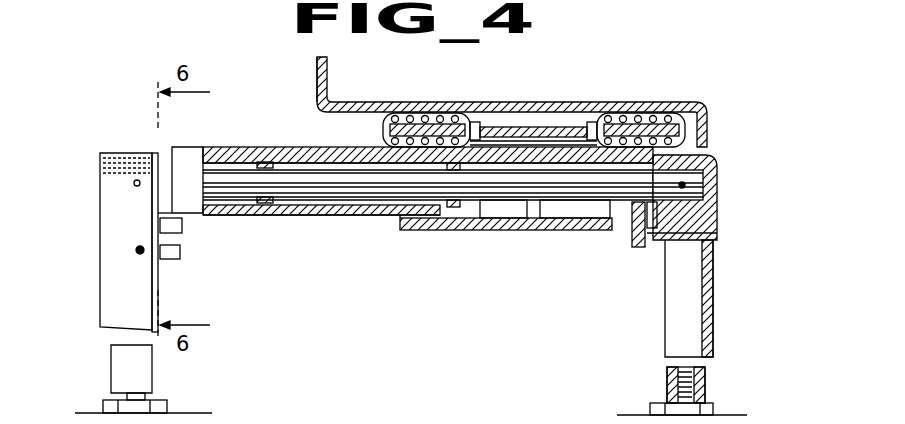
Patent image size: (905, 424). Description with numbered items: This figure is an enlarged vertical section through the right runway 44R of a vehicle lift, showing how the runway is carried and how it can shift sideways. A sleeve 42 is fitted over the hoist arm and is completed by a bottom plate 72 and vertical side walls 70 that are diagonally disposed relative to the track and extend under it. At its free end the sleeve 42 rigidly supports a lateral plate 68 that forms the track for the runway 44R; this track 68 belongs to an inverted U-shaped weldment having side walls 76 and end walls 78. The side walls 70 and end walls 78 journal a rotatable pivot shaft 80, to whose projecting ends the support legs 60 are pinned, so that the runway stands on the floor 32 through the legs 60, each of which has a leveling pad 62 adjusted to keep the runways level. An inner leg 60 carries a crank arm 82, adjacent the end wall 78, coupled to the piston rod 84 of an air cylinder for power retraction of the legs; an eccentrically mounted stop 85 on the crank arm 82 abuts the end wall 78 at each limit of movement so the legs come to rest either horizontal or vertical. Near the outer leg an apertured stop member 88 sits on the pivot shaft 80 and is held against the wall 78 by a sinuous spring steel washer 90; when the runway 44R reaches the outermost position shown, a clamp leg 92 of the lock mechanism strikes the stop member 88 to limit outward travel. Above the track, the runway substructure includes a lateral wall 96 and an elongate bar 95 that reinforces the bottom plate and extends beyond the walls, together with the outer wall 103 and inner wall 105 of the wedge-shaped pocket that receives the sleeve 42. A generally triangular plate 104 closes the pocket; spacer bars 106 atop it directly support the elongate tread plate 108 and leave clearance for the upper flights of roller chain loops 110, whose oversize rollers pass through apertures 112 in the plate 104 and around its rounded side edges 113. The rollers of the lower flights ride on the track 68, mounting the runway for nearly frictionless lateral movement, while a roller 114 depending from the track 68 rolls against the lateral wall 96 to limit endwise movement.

The floor 32 is at (178, 413).
The sleeve 42 is at (307, 205).
The runway 44R is at (695, 105).
The leg 60 is at (115, 358).
The leveling pad 62 is at (110, 397).
The lateral plate 68 is at (256, 152).
The side wall 70 is at (258, 205).
The bottom plate 72 is at (300, 207).
The side wall 76 is at (182, 150).
The end wall 78 is at (165, 195).
The pivot shaft 80 is at (550, 190).
The crank arm 82 is at (162, 268).
The piston rod 84 is at (136, 250).
The stop 85 is at (165, 240).
The stop member 88 is at (700, 238).
The spring steel washer 90 is at (640, 207).
The clamp leg 92 is at (645, 250).
The elongate bar 95 is at (483, 228).
The lateral wall 96 is at (548, 143).
The outer wall 103 is at (603, 207).
The triangular plate 104 is at (530, 127).
The inner wall 105 is at (410, 175).
The spacer bar 106 is at (405, 113).
The tread plate 108 is at (350, 102).
The roller chain loop 110 is at (440, 113).
The aperture 112 is at (483, 122).
The rounded side edge 113 is at (385, 126).
The roller 114 is at (380, 168).